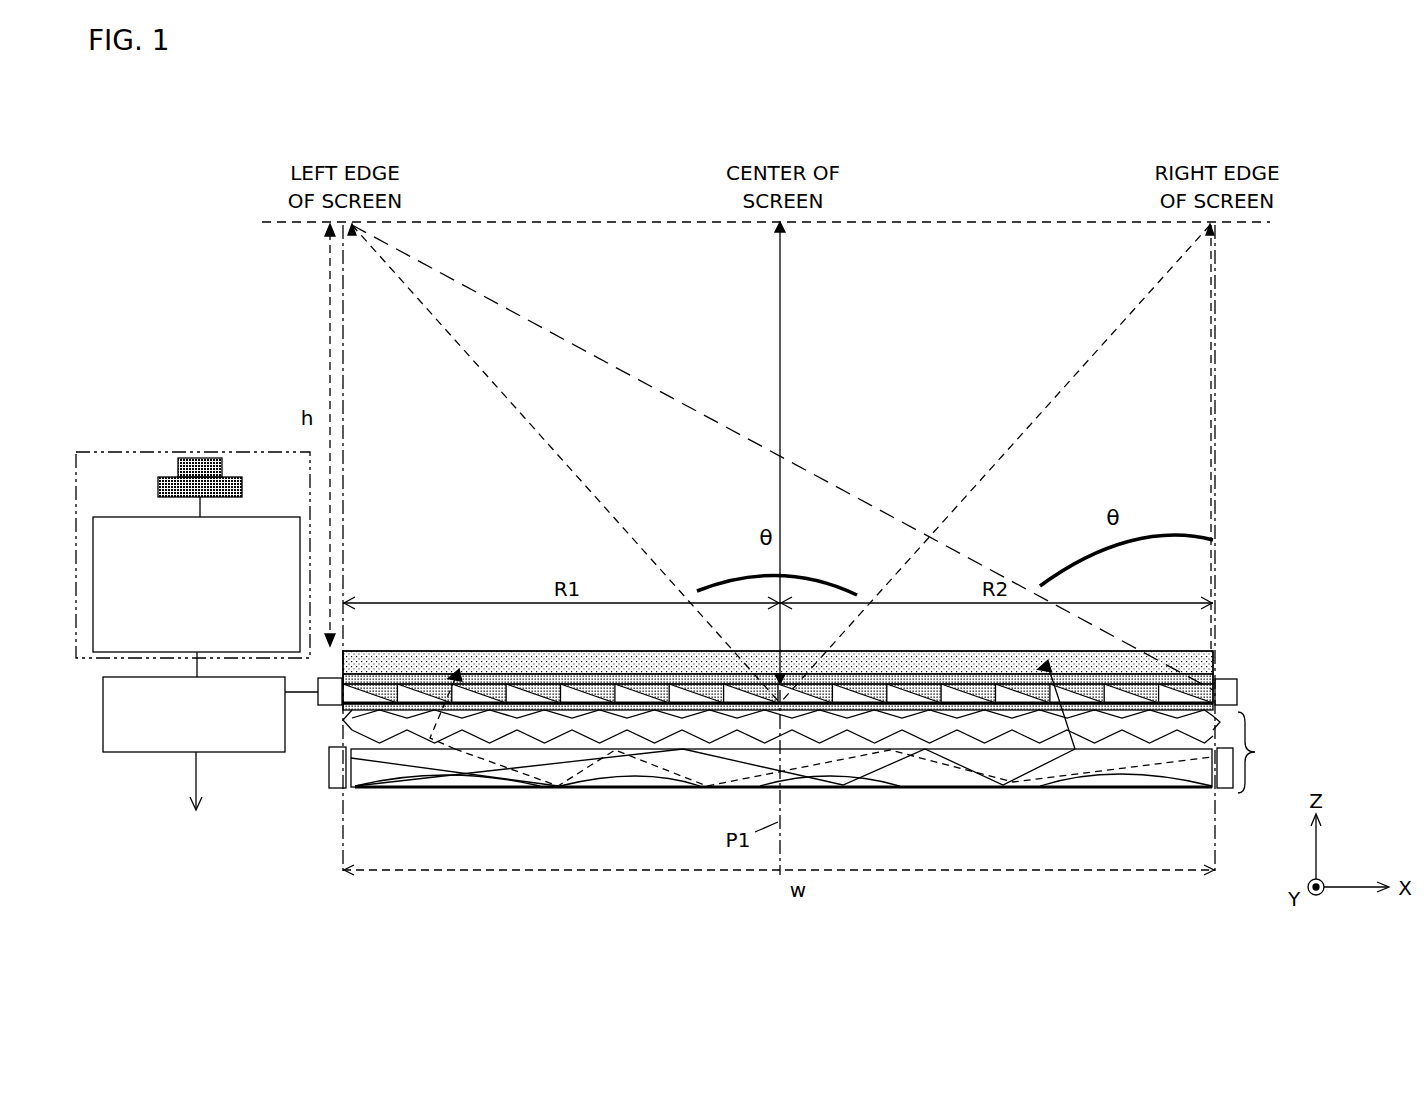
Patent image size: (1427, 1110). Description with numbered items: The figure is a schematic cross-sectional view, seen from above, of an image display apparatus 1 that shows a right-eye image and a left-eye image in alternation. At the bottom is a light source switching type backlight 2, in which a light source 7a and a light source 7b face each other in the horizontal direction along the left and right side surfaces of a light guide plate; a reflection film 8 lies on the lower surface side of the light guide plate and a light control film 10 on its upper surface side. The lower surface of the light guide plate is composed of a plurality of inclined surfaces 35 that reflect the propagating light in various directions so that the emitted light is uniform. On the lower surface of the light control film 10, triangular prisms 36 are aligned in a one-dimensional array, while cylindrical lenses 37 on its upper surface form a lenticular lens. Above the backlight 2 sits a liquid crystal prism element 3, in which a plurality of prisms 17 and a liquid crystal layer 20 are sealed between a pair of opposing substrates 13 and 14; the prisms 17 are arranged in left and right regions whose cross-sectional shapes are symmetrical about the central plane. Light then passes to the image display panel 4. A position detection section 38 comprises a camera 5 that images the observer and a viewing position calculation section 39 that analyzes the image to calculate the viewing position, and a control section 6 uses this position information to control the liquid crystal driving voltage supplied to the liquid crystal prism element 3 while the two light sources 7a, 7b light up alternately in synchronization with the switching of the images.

The image display apparatus 1 is at (275, 213).
The light source switching type backlight 2 is at (1261, 771).
The liquid crystal prism element 3 is at (342, 712).
The image display panel 4 is at (809, 658).
The camera 5 is at (238, 477).
The control section 6 is at (250, 752).
The light source 7a is at (335, 790).
The light source 7b is at (1228, 790).
The reflection film 8 is at (833, 790).
The light control film 10 is at (781, 751).
The opposing substrate 13 is at (575, 672).
The opposing substrate 14 is at (600, 697).
The prisms 17 is at (1130, 690).
The liquid crystal layer 20 is at (1018, 692).
The inclined surfaces 35 is at (617, 778).
The prisms 36 is at (559, 737).
The cylindrical lenses 37 is at (497, 713).
The position detection section 38 is at (195, 452).
The viewing position calculation section 39 is at (250, 518).